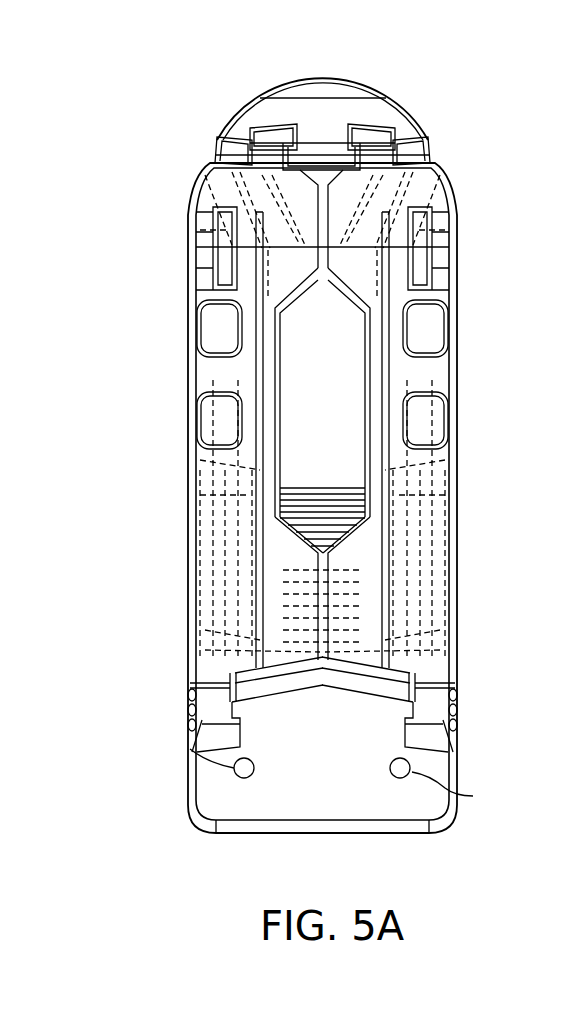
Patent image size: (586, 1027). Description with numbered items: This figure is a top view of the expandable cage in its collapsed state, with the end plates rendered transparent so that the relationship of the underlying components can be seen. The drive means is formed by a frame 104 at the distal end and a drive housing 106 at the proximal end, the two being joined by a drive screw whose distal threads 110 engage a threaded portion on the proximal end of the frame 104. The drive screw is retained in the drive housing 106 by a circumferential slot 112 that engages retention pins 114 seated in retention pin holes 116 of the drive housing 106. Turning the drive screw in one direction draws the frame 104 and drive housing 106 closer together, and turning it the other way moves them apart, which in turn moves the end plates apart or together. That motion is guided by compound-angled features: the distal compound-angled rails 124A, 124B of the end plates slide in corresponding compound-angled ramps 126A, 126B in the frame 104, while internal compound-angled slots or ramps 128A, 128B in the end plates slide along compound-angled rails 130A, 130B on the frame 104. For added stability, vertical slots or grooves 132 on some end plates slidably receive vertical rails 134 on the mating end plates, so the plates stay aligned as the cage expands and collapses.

The frame 104 is at (322, 78).
The drive housing 106 is at (313, 836).
The threads 110 is at (306, 486).
The circumferential slot 112 is at (365, 436).
The retention pins 114 is at (243, 778).
The retention pin holes 116 is at (190, 749).
The distal compound-angled rail 124A is at (234, 135).
The distal compound-angled rail 124B is at (403, 130).
The compound-angled ramp 126A is at (270, 126).
The compound-angled ramp 126B is at (367, 124).
The internal compound-angled slot or ramp 128A is at (200, 296).
The internal compound-angled slot or ramp 128B is at (445, 296).
The compound-angled rail 130A is at (200, 405).
The compound-angled rail 130B is at (445, 405).
The vertical slots or grooves 132 is at (195, 204).
The vertical rails 134 is at (210, 252).